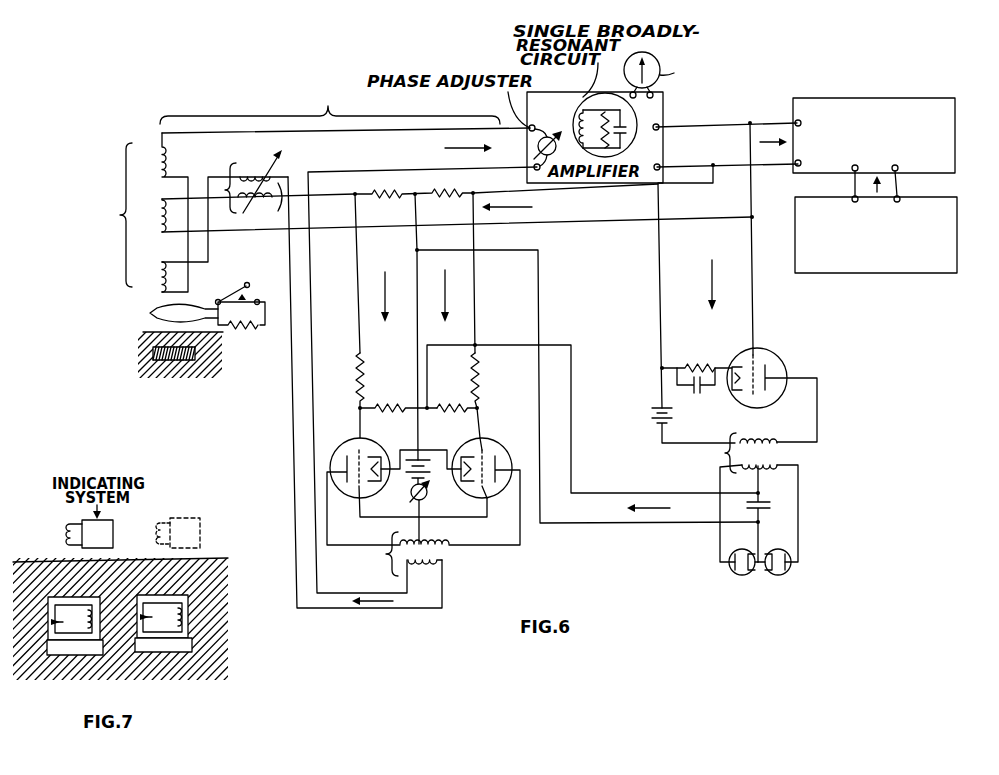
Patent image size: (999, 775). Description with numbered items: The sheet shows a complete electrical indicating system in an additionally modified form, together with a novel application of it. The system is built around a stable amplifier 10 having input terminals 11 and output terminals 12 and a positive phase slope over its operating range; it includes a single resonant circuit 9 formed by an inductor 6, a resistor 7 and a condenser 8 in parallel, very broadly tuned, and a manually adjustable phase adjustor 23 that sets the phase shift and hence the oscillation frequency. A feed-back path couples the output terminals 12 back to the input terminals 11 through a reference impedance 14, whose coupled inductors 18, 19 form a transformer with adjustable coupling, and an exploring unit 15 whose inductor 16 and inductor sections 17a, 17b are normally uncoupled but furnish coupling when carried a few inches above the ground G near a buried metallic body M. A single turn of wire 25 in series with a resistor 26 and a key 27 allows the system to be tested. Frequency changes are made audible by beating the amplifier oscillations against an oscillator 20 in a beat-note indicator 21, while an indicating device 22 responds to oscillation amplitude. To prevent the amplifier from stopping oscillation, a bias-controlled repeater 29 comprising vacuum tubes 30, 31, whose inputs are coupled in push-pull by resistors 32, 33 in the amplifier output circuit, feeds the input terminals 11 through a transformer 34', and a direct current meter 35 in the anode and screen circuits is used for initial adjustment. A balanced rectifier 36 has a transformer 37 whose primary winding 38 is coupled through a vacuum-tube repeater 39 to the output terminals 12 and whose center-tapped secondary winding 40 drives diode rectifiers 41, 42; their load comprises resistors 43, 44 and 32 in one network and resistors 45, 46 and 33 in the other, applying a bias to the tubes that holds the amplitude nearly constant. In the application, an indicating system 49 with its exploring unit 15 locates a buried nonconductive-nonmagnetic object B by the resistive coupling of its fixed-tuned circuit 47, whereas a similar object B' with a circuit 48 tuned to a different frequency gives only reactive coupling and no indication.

In FIG. 6, the exploring unit 15 is at (116, 225).
In FIG. 7, the exploring unit 15 is at (58, 544).
In FIG. 6, the inductor section 17a is at (162, 150).
In FIG. 6, the inductor 16 is at (162, 209).
In FIG. 6, the inductor section 17b is at (162, 268).
In FIG. 6, the inductor 19 is at (247, 156).
In FIG. 6, the inductor 18 is at (236, 213).
In FIG. 6, the reference impedance 14 is at (264, 208).
In FIG. 6, the key or push button 27 is at (241, 292).
In FIG. 6, the single turn of wire 25 is at (157, 309).
In FIG. 6, the resistor 26 is at (236, 329).
In FIG. 6, the ground G is at (150, 332).
In FIG. 6, the buried metallic body M is at (153, 353).
In FIG. 6, the resistor 33 is at (384, 197).
In FIG. 6, the resistor 32 is at (444, 196).
In FIG. 6, the amplifier 10 is at (572, 205).
In FIG. 6, the input terminals 11 is at (509, 150).
In FIG. 6, the phase adjustor 23 is at (557, 138).
In FIG. 6, the inductor 6 is at (580, 148).
In FIG. 6, the resistor 7 is at (603, 98).
In FIG. 6, the single resonant circuit 9 is at (649, 98).
In FIG. 6, the condenser 8 is at (647, 140).
In FIG. 6, the output terminals 12 is at (659, 163).
In FIG. 6, the indicating device 22 is at (662, 56).
In FIG. 6, the beat-note indicator 21 is at (952, 134).
In FIG. 6, the oscillator 20 is at (957, 203).
In FIG. 6, the resistor 46 is at (357, 375).
In FIG. 6, the resistor 45 is at (400, 400).
In FIG. 6, the resistor 43 is at (461, 400).
In FIG. 6, the resistor 44 is at (478, 380).
In FIG. 6, the vacuum tube 31 is at (386, 434).
In FIG. 6, the bias-controlled repeater 29 is at (455, 436).
In FIG. 6, the vacuum tube 30 is at (489, 437).
In FIG. 6, the direct current meter 35 is at (429, 495).
In FIG. 6, the transformer 34' is at (428, 546).
In FIG. 6, the vacuum-tube repeater 39 is at (782, 358).
In FIG. 6, the primary winding 38 is at (760, 423).
In FIG. 6, the transformer 37 is at (762, 463).
In FIG. 6, the center-tapped secondary winding 40 is at (763, 474).
In FIG. 6, the balanced rectifier 36 is at (833, 503).
In FIG. 6, the diode rectifier 42 is at (733, 571).
In FIG. 6, the diode rectifier 41 is at (787, 572).
In FIG. 7, the indicating system 49 is at (113, 546).
In FIG. 7, the fixed-tuned circuit 47 is at (72, 612).
In FIG. 7, the fixed-tuned circuit 48 is at (163, 612).
In FIG. 7, the nonconductive-nonmagnetic object B is at (75, 671).
In FIG. 7, the nonconductive-nonmagnetic object B' is at (163, 670).